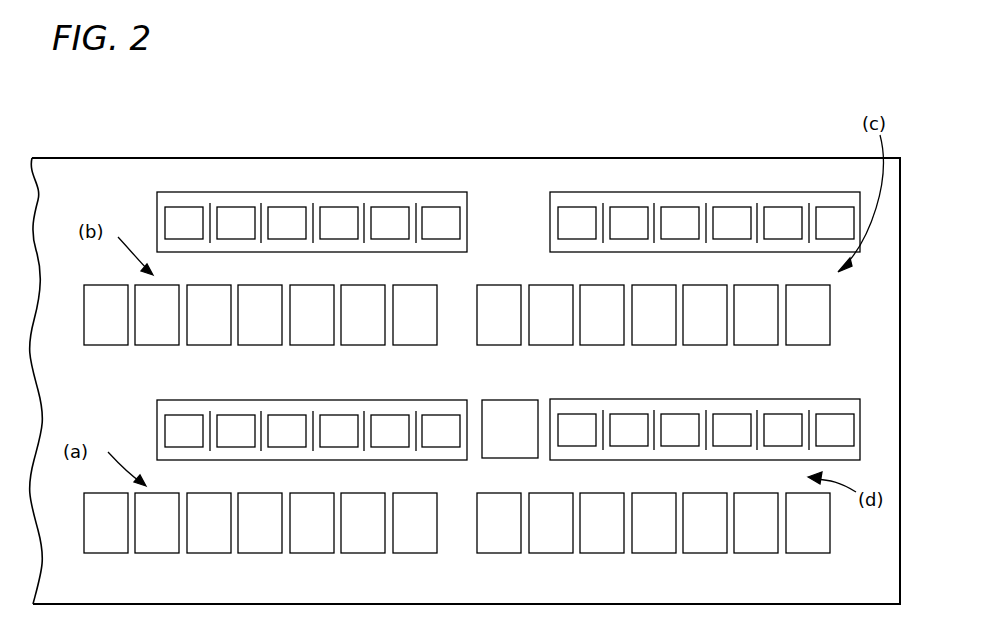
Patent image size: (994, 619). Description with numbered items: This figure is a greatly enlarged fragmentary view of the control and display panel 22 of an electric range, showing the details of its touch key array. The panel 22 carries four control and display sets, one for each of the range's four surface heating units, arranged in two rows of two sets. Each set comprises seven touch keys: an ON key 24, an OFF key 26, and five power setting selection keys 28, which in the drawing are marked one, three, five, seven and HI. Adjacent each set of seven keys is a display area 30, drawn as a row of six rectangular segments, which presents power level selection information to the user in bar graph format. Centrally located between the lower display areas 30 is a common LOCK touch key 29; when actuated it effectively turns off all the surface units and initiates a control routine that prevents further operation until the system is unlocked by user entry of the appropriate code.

The control and display panel 22 is at (506, 172).
The ON key 24 is at (102, 345).
The OFF key 26 is at (157, 345).
The power setting selection keys 28 is at (416, 345).
The LOCK touch key 29 is at (503, 458).
The display area 30 is at (373, 197).